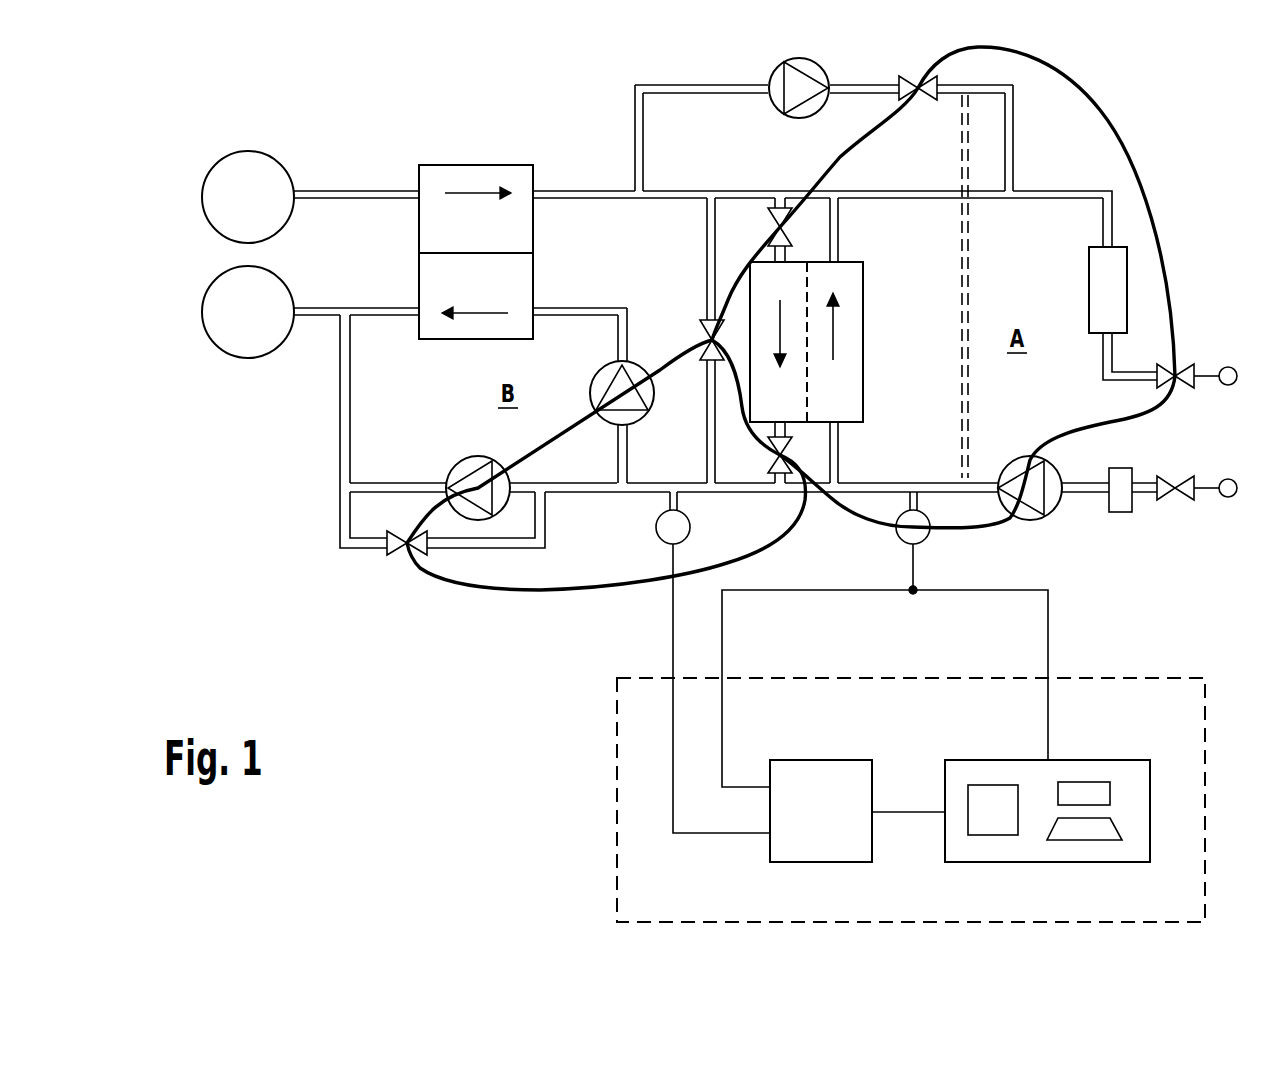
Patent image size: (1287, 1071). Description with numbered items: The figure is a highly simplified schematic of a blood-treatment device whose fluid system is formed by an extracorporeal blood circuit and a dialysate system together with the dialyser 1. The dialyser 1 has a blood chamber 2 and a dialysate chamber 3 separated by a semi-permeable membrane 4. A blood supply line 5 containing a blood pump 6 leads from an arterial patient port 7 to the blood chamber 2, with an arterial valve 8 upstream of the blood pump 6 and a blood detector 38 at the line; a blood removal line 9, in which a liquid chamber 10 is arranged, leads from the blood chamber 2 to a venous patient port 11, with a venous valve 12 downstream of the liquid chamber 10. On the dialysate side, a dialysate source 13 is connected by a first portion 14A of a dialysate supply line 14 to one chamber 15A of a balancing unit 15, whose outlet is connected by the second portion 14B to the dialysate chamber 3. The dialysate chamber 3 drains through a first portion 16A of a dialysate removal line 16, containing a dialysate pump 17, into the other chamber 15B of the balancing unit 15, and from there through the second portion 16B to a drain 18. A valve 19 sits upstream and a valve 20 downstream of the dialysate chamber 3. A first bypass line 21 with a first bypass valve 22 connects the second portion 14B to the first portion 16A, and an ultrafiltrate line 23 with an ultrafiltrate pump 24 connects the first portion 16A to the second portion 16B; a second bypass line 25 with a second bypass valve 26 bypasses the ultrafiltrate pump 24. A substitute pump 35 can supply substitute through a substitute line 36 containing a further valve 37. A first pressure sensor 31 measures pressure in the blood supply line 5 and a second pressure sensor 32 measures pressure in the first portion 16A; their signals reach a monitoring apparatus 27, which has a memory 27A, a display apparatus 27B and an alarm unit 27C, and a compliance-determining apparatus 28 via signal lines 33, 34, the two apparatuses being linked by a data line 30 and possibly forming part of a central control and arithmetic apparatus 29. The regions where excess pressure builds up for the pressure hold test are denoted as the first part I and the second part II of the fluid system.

The dialyser 1 is at (872, 340).
The blood chamber 2 is at (863, 397).
The dialysate chamber 3 is at (752, 402).
The semi-permeable membrane 4 is at (812, 270).
The blood supply line 5 is at (1083, 495).
The blood pump 6 is at (1017, 458).
The arterial patient port 7 is at (1232, 478).
The arterial valve 8 is at (1178, 476).
The blood removal line 9 is at (1050, 190).
The liquid chamber 10 is at (1088, 272).
The venous patient port 11 is at (1240, 367).
The venous valve 12 is at (1188, 364).
The dialysate source 13 is at (249, 151).
The dialysate supply line 14 is at (556, 188).
The first portion of dialysate supply line 14A is at (358, 190).
The second portion of dialysate supply line 14B is at (677, 190).
The balancing unit 15 is at (468, 162).
The one chamber of balancing unit 15A is at (520, 228).
The other chamber of balancing unit 15B is at (520, 287).
The dialysate removal line 16 is at (633, 316).
The first portion of dialysate removal line 16A is at (736, 494).
The second portion of dialysate removal line 16B is at (358, 307).
The dialysate pump 17 is at (605, 425).
The drain 18 is at (234, 358).
The valve 19 is at (782, 207).
The valve 20 is at (798, 452).
The first bypass line 21 is at (705, 245).
The first bypass valve 22 is at (708, 352).
The ultrafiltrate line 23 is at (382, 482).
The ultrafiltrate pump 24 is at (463, 457).
The second bypass line 25 is at (472, 549).
The second bypass valve 26 is at (401, 556).
The monitoring apparatus 27 is at (1152, 777).
The memory 27A is at (983, 784).
The display apparatus 27B is at (1083, 781).
The alarm unit 27C is at (1088, 841).
The compliance-determining apparatus 28 is at (805, 759).
The central control and arithmetic apparatus 29 is at (1206, 830).
The data line 30 is at (905, 811).
The first pressure sensor 31 is at (897, 536).
The second pressure sensor 32 is at (656, 527).
The signal line 33 is at (1048, 637).
The signal line 34 is at (672, 637).
The substitute pump 35 is at (770, 68).
The substitute line 36 is at (976, 92).
The further valve 37 is at (908, 80).
The blood detector 38 is at (1118, 514).
The first part of the fluid system I is at (1105, 112).
The second part of the fluid system II is at (545, 598).